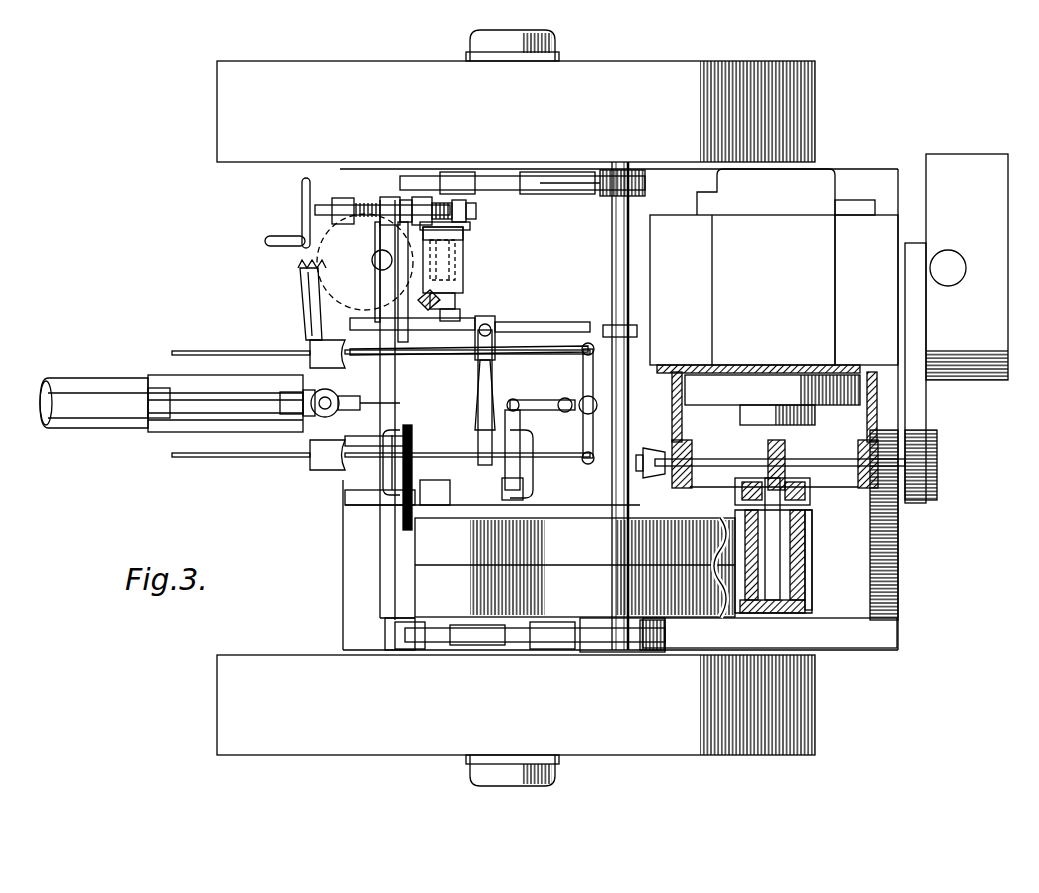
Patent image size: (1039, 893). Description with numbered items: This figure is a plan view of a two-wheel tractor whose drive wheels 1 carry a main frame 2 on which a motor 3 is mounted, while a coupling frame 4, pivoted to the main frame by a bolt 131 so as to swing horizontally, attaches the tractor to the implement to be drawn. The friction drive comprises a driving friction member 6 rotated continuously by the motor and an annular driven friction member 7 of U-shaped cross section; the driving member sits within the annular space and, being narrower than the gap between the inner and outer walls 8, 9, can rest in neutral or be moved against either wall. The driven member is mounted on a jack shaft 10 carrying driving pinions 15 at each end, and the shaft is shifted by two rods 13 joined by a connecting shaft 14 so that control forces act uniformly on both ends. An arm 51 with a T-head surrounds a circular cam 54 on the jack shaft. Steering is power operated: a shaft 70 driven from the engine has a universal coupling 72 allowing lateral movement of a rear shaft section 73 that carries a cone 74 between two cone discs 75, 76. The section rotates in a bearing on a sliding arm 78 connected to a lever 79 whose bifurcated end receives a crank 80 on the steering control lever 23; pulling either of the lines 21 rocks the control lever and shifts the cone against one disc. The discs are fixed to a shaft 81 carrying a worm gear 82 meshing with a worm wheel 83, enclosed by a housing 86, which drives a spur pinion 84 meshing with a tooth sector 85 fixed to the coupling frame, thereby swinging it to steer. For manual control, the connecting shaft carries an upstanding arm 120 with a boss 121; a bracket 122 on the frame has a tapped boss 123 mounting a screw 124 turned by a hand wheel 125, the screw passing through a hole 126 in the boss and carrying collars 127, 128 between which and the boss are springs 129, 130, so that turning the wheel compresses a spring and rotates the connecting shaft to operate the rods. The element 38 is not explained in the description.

The drive wheels 1 is at (228, 119).
The main frame 2 is at (897, 622).
The motor 3 is at (822, 212).
The coupling frame 4 is at (175, 405).
The driving friction member 6 is at (785, 615).
The annular driven friction member 7 is at (647, 30).
The inner wall 8 is at (675, 567).
The outer wall 9 is at (805, 590).
The jack shaft 10 is at (612, 258).
The rods 13 is at (525, 176).
The connecting shaft 14 is at (382, 596).
The driving pinions 15 is at (400, 200).
The lines 21 is at (185, 348).
The steering control lever 23 is at (582, 434).
The block 38 is at (385, 626).
The arm 51 is at (545, 322).
The circular cam 54 is at (595, 322).
The shaft 70 is at (706, 490).
The universal coupling 72 is at (655, 490).
The rear shaft section 73 is at (596, 507).
The cone 74 is at (575, 567).
The cone disc 75 is at (385, 505).
The cone disc 76 is at (385, 470).
The sliding arm 78 is at (520, 418).
The lever 79 is at (530, 400).
The crank 80 is at (565, 398).
The shaft 81 is at (460, 312).
The worm gear 82 is at (455, 272).
The worm wheel 83 is at (305, 300).
The spur pinion 84 is at (455, 295).
The tooth sector 85 is at (300, 277).
The housing 86 is at (463, 262).
The upstanding arm 120 is at (463, 235).
The boss 121 is at (470, 225).
The bracket 122 is at (365, 200).
The tapped boss 123 is at (353, 198).
The screw 124 is at (342, 198).
The hand wheel 125 is at (303, 203).
The hole 126 is at (474, 206).
The collar 127 is at (388, 197).
The collar 128 is at (452, 200).
The spring 129 is at (418, 197).
The spring 130 is at (430, 200).
The bolt 131 is at (315, 392).